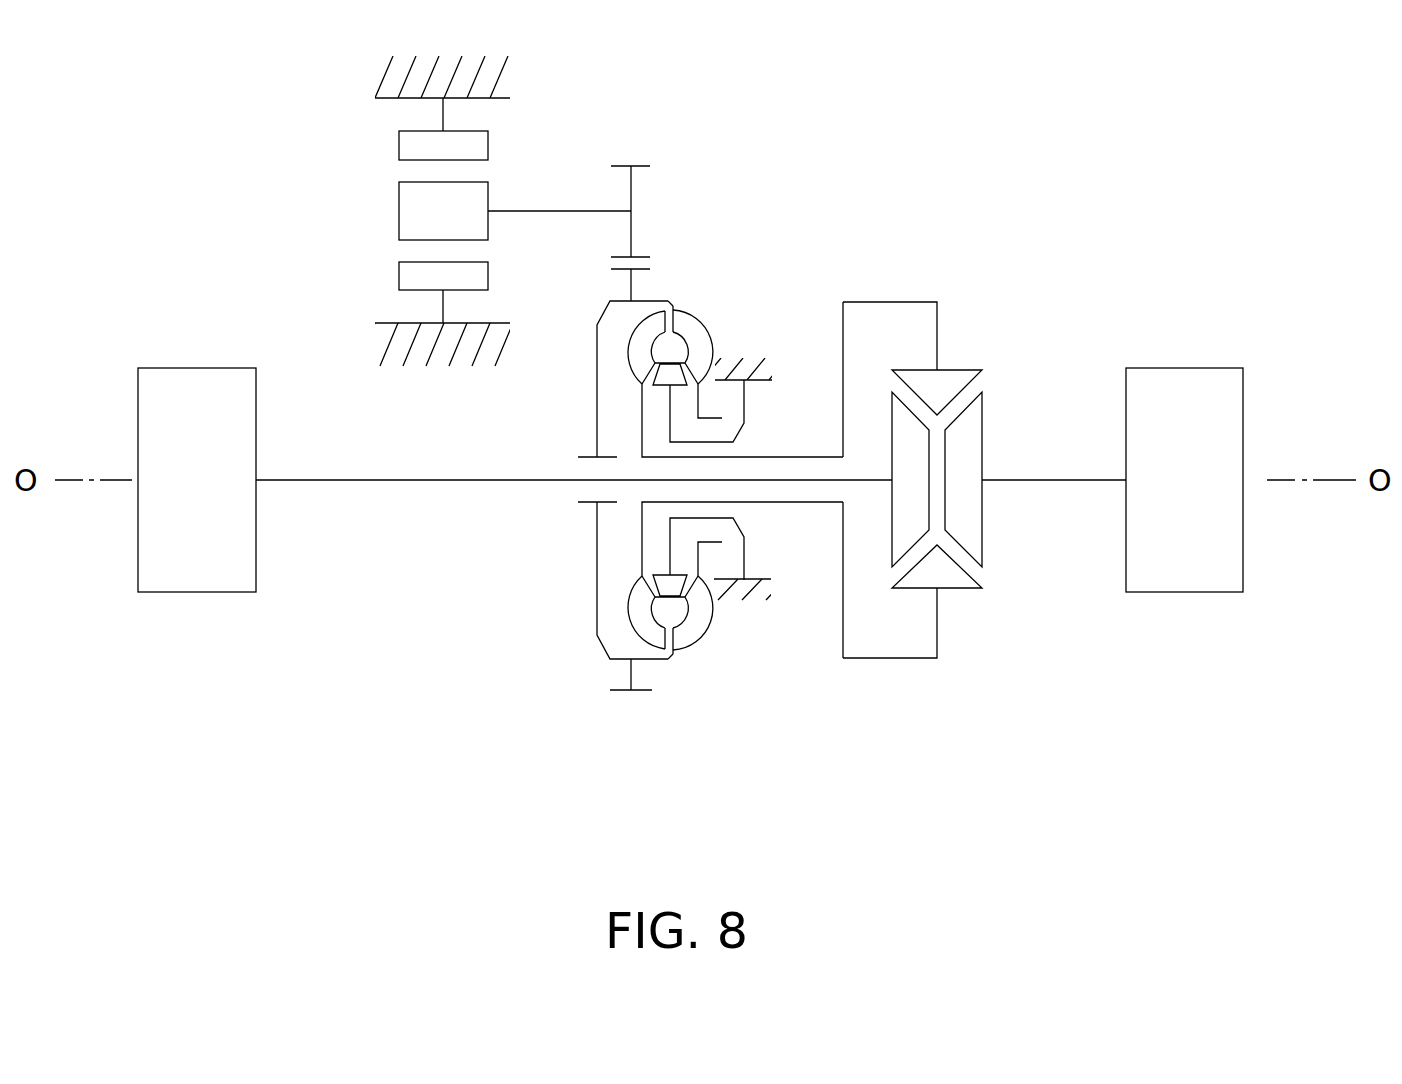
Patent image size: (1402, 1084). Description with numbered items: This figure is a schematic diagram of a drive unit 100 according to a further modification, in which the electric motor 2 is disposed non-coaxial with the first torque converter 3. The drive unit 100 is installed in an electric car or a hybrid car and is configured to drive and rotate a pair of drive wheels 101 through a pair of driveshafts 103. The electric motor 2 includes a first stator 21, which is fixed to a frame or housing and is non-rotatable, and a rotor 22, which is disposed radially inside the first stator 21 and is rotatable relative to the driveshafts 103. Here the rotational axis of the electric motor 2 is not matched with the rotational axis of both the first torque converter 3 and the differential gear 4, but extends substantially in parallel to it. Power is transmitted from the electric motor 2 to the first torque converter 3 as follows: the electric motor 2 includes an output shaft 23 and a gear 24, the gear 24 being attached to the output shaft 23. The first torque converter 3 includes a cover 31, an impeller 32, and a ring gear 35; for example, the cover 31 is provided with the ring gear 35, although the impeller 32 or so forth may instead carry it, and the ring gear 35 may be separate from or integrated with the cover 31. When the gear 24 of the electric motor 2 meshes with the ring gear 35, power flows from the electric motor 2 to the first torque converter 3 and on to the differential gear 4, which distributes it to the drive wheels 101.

The drive unit 100 is at (865, 195).
The electric motor 2 is at (525, 164).
The first stator 21 is at (399, 147).
The rotor 22 is at (399, 212).
The output shaft 23 is at (582, 210).
The gear 24 is at (648, 165).
The first torque converter 3 is at (688, 286).
The cover 31 is at (597, 332).
The impeller 32 is at (703, 318).
The ring gear 35 is at (648, 277).
The differential gear 4 is at (1003, 365).
The drive wheels 101 is at (178, 592).
The driveshafts 103 is at (357, 481).